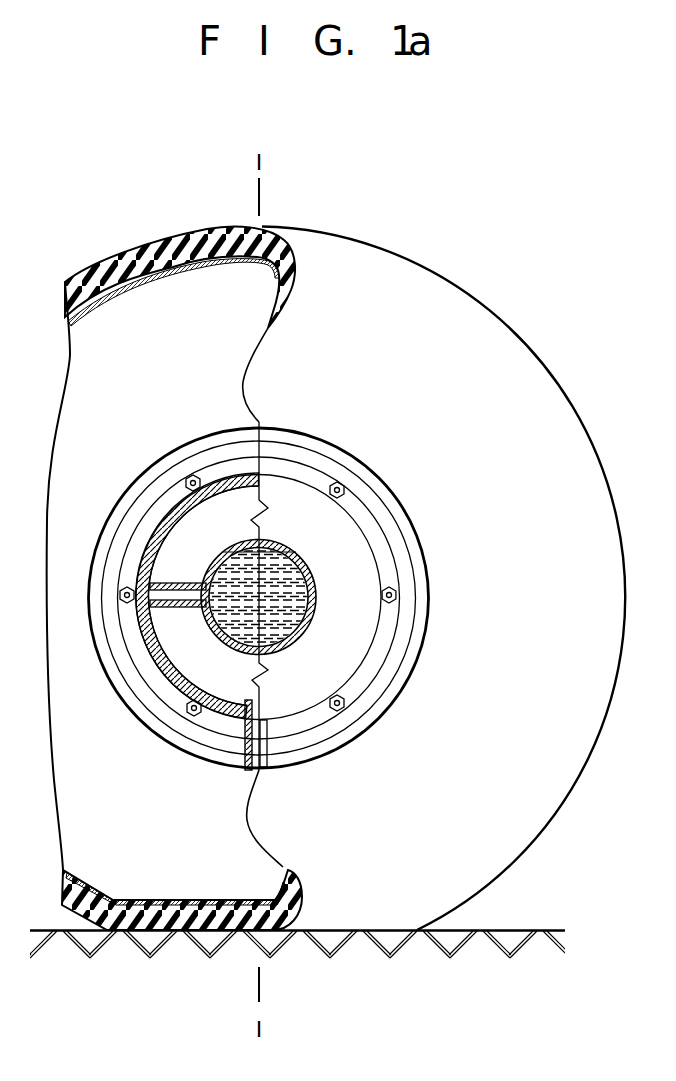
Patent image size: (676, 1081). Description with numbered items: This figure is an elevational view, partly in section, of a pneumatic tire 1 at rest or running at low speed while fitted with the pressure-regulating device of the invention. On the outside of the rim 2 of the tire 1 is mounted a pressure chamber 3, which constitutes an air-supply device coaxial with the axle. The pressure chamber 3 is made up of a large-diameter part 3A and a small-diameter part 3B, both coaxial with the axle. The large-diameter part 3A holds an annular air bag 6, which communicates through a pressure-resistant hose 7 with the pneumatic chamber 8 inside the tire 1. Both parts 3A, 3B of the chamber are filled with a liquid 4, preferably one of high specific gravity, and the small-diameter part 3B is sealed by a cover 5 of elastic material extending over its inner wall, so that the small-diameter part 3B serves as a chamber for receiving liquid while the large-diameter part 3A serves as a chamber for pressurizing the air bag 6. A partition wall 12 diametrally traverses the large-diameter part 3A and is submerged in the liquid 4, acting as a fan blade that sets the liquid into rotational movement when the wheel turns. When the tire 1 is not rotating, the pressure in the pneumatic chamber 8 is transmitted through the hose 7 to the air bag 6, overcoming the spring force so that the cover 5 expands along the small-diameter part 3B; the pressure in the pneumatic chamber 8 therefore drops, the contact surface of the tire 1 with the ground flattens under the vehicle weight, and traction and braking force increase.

The pneumatic tire 1 is at (548, 823).
The rim 2 is at (355, 466).
The pressure chamber 3 is at (152, 670).
The large-diameter part 3A is at (283, 515).
The small-diameter part 3B is at (305, 565).
The liquid 4 is at (226, 578).
The cover 5 is at (303, 597).
The annular air bag 6 is at (222, 497).
The pressure-resistant hose 7 is at (242, 752).
The pneumatic chamber 8 is at (121, 845).
The partition wall 12 is at (192, 607).